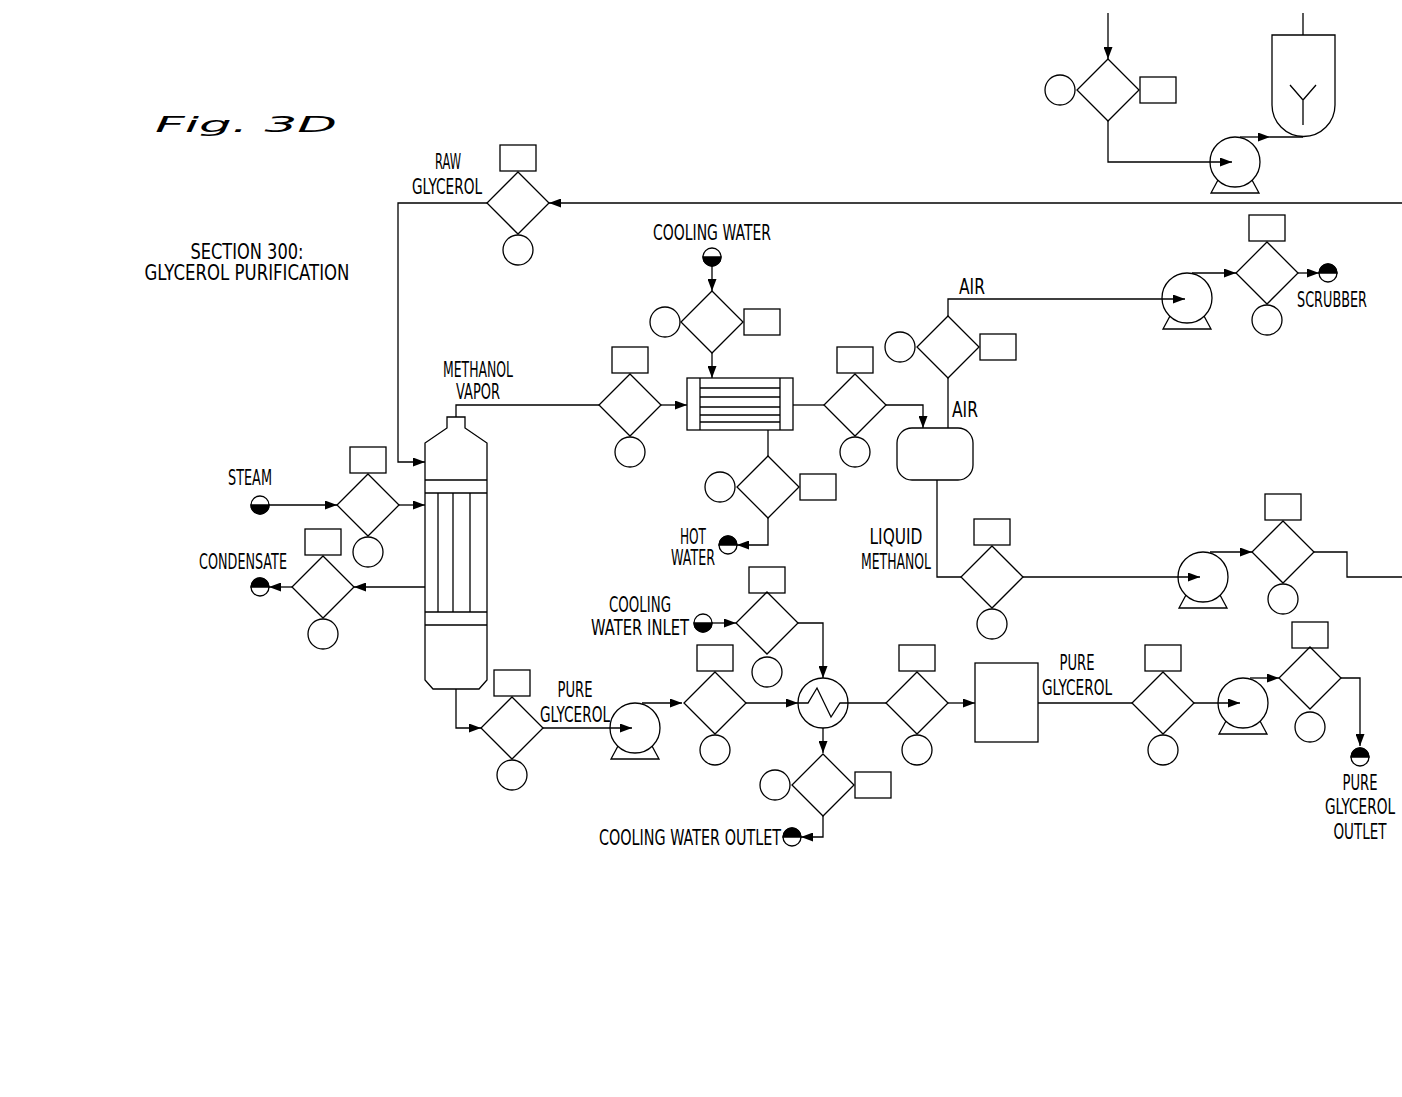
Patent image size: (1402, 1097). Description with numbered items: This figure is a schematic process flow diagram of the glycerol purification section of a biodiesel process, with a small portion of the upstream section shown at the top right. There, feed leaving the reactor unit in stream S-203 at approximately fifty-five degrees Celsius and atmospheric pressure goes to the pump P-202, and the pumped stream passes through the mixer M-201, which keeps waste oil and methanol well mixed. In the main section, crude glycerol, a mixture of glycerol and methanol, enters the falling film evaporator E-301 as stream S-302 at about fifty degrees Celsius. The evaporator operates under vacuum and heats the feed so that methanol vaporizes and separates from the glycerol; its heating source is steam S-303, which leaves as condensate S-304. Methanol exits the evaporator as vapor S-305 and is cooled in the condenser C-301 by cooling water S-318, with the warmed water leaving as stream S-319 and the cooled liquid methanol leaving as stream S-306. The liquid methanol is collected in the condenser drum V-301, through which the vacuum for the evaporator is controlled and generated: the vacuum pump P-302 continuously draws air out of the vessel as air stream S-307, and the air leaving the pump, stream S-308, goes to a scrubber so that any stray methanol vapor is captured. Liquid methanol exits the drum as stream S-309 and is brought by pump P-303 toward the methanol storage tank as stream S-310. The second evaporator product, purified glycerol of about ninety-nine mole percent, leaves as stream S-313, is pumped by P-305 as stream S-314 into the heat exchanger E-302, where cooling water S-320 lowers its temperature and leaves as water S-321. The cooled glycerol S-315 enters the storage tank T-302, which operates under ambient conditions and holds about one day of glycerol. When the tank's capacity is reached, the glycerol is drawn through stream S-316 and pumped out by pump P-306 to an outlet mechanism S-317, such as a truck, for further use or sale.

The crude glycerol feed stream S-302 is at (518, 205).
The feed stream leaving unit R-201 S-203 is at (1110, 90).
The pump P-202 is at (1225, 150).
The mixer M-201 is at (1318, 91).
The steam stream S-303 is at (368, 507).
The condensate stream S-304 is at (323, 589).
The falling film evaporator E-301 is at (504, 553).
The methanol vapor stream S-305 is at (630, 407).
The condenser C-301 is at (729, 404).
The cooling water stream S-318 is at (715, 322).
The cooling water outlet stream S-319 is at (770, 487).
The cooled liquid methanol stream S-306 is at (855, 407).
The condenser drum V-301 is at (960, 454).
The air stream exiting vessel S-307 is at (950, 347).
The vacuum pump P-302 is at (1183, 317).
The air stream to scrubber S-308 is at (1267, 275).
The liquid methanol stream from condenser drum S-309 is at (992, 579).
The pump P-303 is at (1203, 595).
The methanol stream to storage tank S-310 is at (1283, 554).
The purified glycerol product stream S-313 is at (512, 730).
The pump P-305 is at (622, 744).
The pumped glycerol stream S-314 is at (715, 705).
The heat exchanger E-302 is at (844, 710).
The cooling water inlet stream S-320 is at (767, 627).
The cooling water outlet stream S-321 is at (825, 785).
The cooled glycerol stream S-315 is at (917, 705).
The glycerol storage tank T-302 is at (1006, 702).
The pure glycerol stream S-316 is at (1163, 705).
The pump P-306 is at (1228, 720).
The glycerol outlet stream S-317 is at (1310, 682).